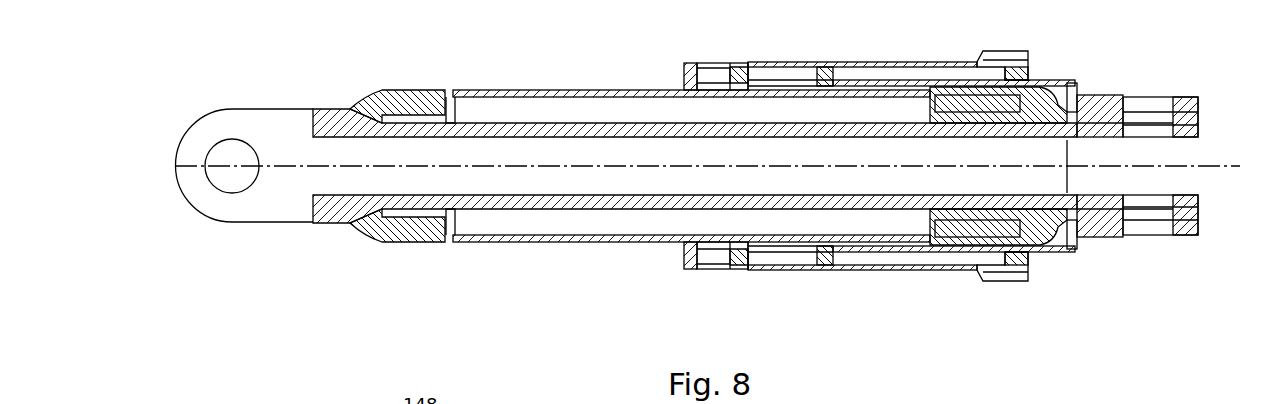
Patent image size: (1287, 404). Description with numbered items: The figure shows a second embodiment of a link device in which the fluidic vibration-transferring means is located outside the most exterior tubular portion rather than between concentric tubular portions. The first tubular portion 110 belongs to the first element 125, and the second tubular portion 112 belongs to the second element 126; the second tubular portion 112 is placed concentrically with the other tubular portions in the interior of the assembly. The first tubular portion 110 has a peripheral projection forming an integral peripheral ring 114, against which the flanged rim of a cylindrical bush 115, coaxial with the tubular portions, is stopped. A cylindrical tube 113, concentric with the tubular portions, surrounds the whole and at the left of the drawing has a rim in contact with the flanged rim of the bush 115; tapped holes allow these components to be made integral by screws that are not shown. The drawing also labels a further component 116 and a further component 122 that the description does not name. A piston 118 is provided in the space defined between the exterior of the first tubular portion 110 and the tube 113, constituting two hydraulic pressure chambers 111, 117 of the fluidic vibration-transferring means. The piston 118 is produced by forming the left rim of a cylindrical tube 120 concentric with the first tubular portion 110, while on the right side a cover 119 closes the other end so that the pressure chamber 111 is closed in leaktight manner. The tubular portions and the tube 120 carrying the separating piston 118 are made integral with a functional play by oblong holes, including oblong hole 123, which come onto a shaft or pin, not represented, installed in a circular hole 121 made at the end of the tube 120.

The first tubular portion 110 is at (612, 89).
The pressure chamber 111 is at (923, 261).
The second tubular portion 112 is at (505, 207).
The cylindrical tube 113 is at (930, 62).
The peripheral ring 114 is at (684, 62).
The cylindrical bush 115 is at (700, 62).
The lower nut 116 is at (728, 271).
The hydraulic chamber 117 is at (797, 74).
The piston 118 is at (838, 79).
The cover 119 is at (1022, 64).
The cylindrical tube 120 is at (1092, 96).
The circular hole 121 is at (1125, 236).
The pin bore 122 is at (1125, 217).
The oblong hole 123 is at (1126, 191).
The first element 125 is at (411, 78).
The second element 126 is at (156, 104).